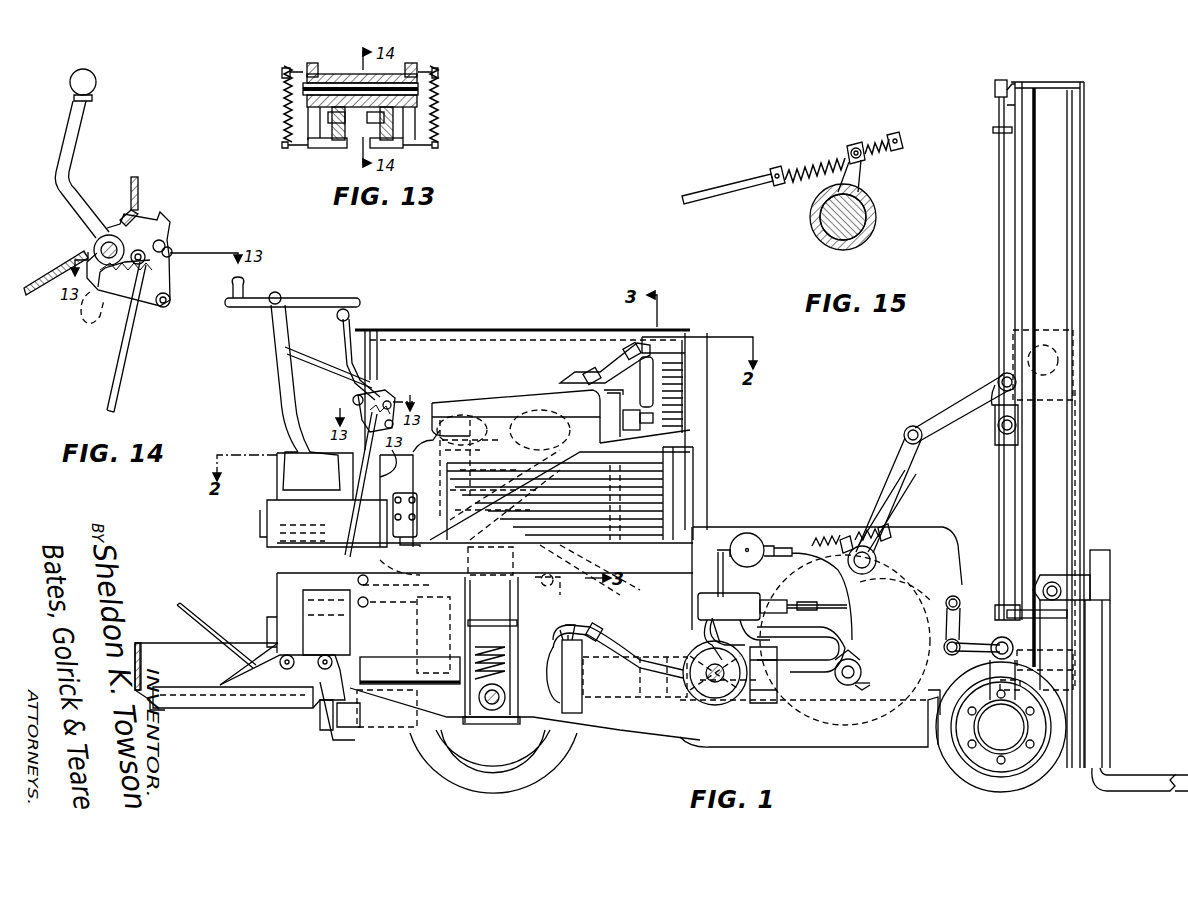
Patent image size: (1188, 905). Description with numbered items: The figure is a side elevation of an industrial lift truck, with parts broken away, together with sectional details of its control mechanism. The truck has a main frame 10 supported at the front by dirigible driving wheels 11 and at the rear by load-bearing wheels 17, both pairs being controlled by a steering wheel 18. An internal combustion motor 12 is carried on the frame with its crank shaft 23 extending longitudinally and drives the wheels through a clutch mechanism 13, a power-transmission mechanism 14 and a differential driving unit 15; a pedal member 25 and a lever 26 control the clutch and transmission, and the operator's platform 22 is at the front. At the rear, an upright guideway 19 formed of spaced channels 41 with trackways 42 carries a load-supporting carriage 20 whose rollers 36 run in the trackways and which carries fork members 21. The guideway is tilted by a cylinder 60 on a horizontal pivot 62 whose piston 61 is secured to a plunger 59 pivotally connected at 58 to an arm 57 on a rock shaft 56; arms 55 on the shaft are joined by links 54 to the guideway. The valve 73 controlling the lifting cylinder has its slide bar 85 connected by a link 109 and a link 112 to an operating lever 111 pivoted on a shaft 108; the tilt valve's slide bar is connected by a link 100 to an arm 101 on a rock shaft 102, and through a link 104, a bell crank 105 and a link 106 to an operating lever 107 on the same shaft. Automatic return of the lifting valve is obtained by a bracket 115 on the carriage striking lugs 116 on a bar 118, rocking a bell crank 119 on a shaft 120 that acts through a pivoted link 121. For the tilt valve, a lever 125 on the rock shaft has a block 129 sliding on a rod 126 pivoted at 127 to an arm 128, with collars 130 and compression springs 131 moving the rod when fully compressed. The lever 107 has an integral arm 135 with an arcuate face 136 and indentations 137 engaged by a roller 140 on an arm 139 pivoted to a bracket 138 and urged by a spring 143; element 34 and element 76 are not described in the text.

In FIG. 1, the main frame 10 is at (410, 697).
In FIG. 1, the driving wheels 11 is at (430, 758).
In FIG. 1, the internal combustion motor 12 is at (508, 400).
In FIG. 1, the clutch mechanism 13 is at (400, 501).
In FIG. 1, the power-transmission mechanism 14 is at (323, 500).
In FIG. 1, the differential driving unit 15 is at (476, 737).
In FIG. 1, the load-bearing wheels 17 is at (950, 762).
In FIG. 1, the steering wheel 18 is at (255, 300).
In FIG. 1, the upright guideway 19 is at (1060, 282).
In FIG. 1, the load-supporting carriage 20 is at (1078, 640).
In FIG. 1, the fork members 21 is at (1135, 768).
In FIG. 1, the operator's platform 22 is at (247, 700).
In FIG. 1, the crank shaft 23 is at (418, 563).
In FIG. 1, the pedal member 25 is at (195, 610).
In FIG. 1, the lever 26 is at (280, 378).
In FIG. 1, the dash panel 34 is at (425, 440).
In FIG. 1, the rollers 36 is at (1048, 577).
In FIG. 1, the channels 41 is at (1085, 325).
In FIG. 1, the trackways 42 is at (1033, 246).
In FIG. 1, the links 54 is at (963, 398).
In FIG. 1, the arms 55 is at (897, 457).
In FIG. 15, the rock shaft 56 is at (858, 215).
In FIG. 1, the rock shaft 56 is at (878, 557).
In FIG. 1, the arm 57 is at (893, 588).
In FIG. 1, the pivotal connection 58 is at (867, 682).
In FIG. 1, the plunger 59 is at (838, 687).
In FIG. 1, the cylinder 60 is at (648, 700).
In FIG. 1, the piston 61 is at (630, 685).
In FIG. 1, the horizontal pivot 62 is at (710, 695).
In FIG. 1, the valve 73 is at (742, 626).
In FIG. 1, the pump 76 is at (750, 540).
In FIG. 1, the slide bar 85 is at (788, 598).
In FIG. 1, the link 100 is at (597, 628).
In FIG. 1, the arm 101 is at (555, 585).
In FIG. 1, the rock shaft 102 is at (545, 575).
In FIG. 1, the link 104 is at (491, 650).
In FIG. 1, the bell crank 105 is at (375, 603).
In FIG. 14, the link 106 is at (120, 384).
In FIG. 13, the link 106 is at (372, 124).
In FIG. 14, the operating lever 107 is at (70, 159).
In FIG. 13, the operating lever 107 is at (388, 75).
In FIG. 14, the shaft 108 is at (110, 244).
In FIG. 13, the shaft 108 is at (302, 89).
In FIG. 1, the link 109 is at (490, 561).
In FIG. 13, the operating lever 111 is at (340, 74).
In FIG. 1, the operating lever 111 is at (350, 335).
In FIG. 13, the link 112 is at (343, 122).
In FIG. 1, the bracket 115 is at (1060, 622).
In FIG. 1, the lugs 116 is at (1000, 135).
In FIG. 1, the bar 118 is at (1000, 226).
In FIG. 1, the bell crank 119 is at (975, 658).
In FIG. 1, the shaft 120 is at (945, 640).
In FIG. 1, the pivoted link 121 is at (953, 596).
In FIG. 15, the lever 125 is at (858, 177).
In FIG. 1, the lever 125 is at (908, 540).
In FIG. 15, the rod 126 is at (716, 192).
In FIG. 1, the rod 126 is at (713, 545).
In FIG. 1, the pivotal connection 127 is at (508, 680).
In FIG. 1, the arm 128 is at (491, 655).
In FIG. 15, the block 129 is at (854, 144).
In FIG. 15, the collars 130 is at (788, 150).
In FIG. 1, the collars 130 is at (838, 542).
In FIG. 15, the compression springs 131 is at (828, 146).
In FIG. 1, the compression springs 131 is at (850, 536).
In FIG. 14, the integral arm 135 is at (145, 225).
In FIG. 13, the integral arm 135 is at (392, 129).
In FIG. 14, the arcuate face 136 is at (163, 247).
In FIG. 14, the indentations 137 is at (165, 238).
In FIG. 14, the bracket 138 is at (105, 285).
In FIG. 13, the bracket 138 is at (407, 121).
In FIG. 1, the bracket 138 is at (365, 430).
In FIG. 14, the arm 139 is at (172, 288).
In FIG. 1, the arm 139 is at (395, 400).
In FIG. 14, the roller 140 is at (172, 252).
In FIG. 13, the roller 140 is at (395, 150).
In FIG. 14, the spring 143 is at (98, 311).
In FIG. 13, the spring 143 is at (432, 104).